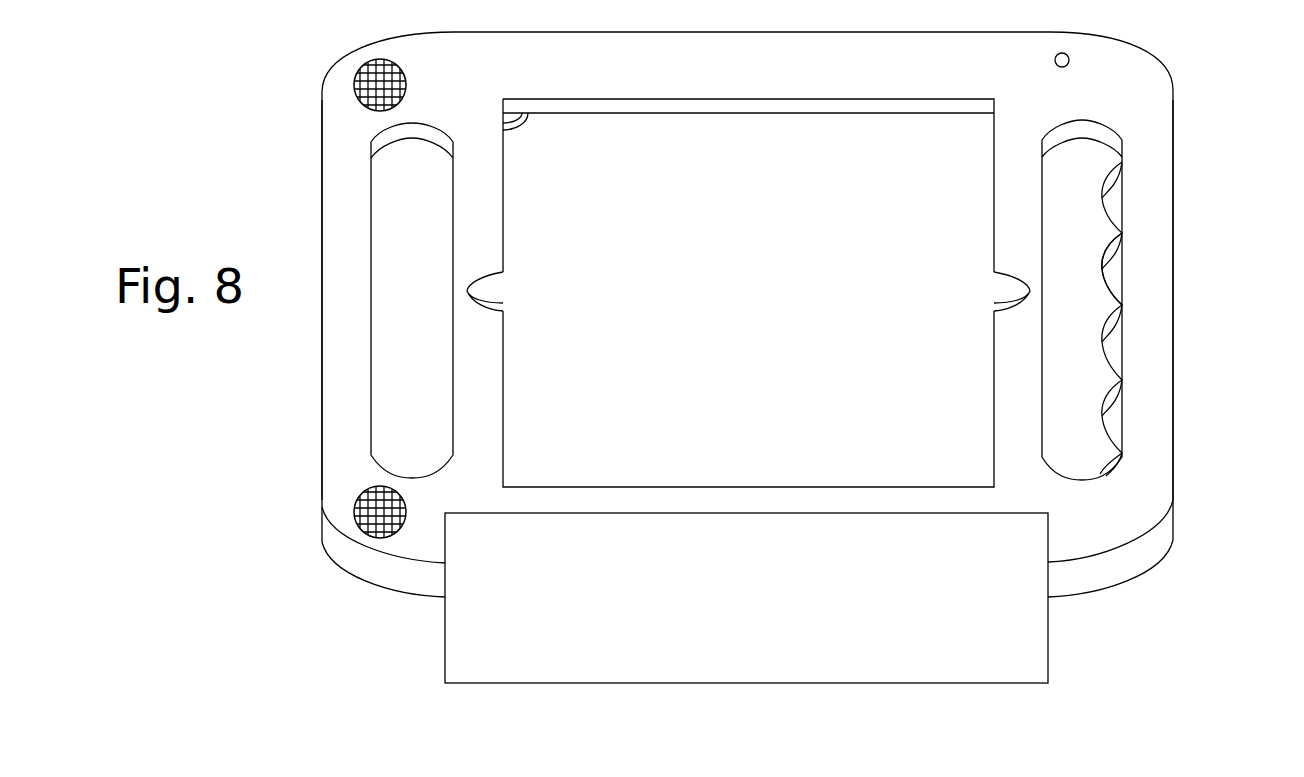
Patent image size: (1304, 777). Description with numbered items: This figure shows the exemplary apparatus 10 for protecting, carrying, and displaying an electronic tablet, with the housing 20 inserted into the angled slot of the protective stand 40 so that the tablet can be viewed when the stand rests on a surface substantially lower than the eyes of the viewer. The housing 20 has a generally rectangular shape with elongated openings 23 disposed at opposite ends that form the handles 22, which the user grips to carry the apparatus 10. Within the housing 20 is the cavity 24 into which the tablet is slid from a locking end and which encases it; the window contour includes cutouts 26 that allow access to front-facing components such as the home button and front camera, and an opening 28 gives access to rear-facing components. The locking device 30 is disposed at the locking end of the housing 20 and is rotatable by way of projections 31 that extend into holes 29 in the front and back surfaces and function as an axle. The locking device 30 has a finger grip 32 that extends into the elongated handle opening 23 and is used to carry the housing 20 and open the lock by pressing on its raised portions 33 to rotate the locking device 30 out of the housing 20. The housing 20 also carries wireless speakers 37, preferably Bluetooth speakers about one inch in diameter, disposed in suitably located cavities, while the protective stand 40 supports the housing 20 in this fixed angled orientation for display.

The apparatus 10 is at (748, 345).
The housing 20 is at (320, 405).
The handle 22 is at (298, 351).
The elongated opening 23 is at (427, 390).
The cavity 24 is at (756, 321).
The cutout 26 is at (512, 296).
The opening 28 is at (527, 118).
The hole 29 is at (1056, 67).
The locking device 30 is at (1089, 313).
The projection 31 is at (1070, 63).
The finger grip 32 is at (1120, 302).
The raised portion 33 is at (1102, 267).
The wireless speaker 37 is at (356, 75).
The protective stand 40 is at (1048, 643).